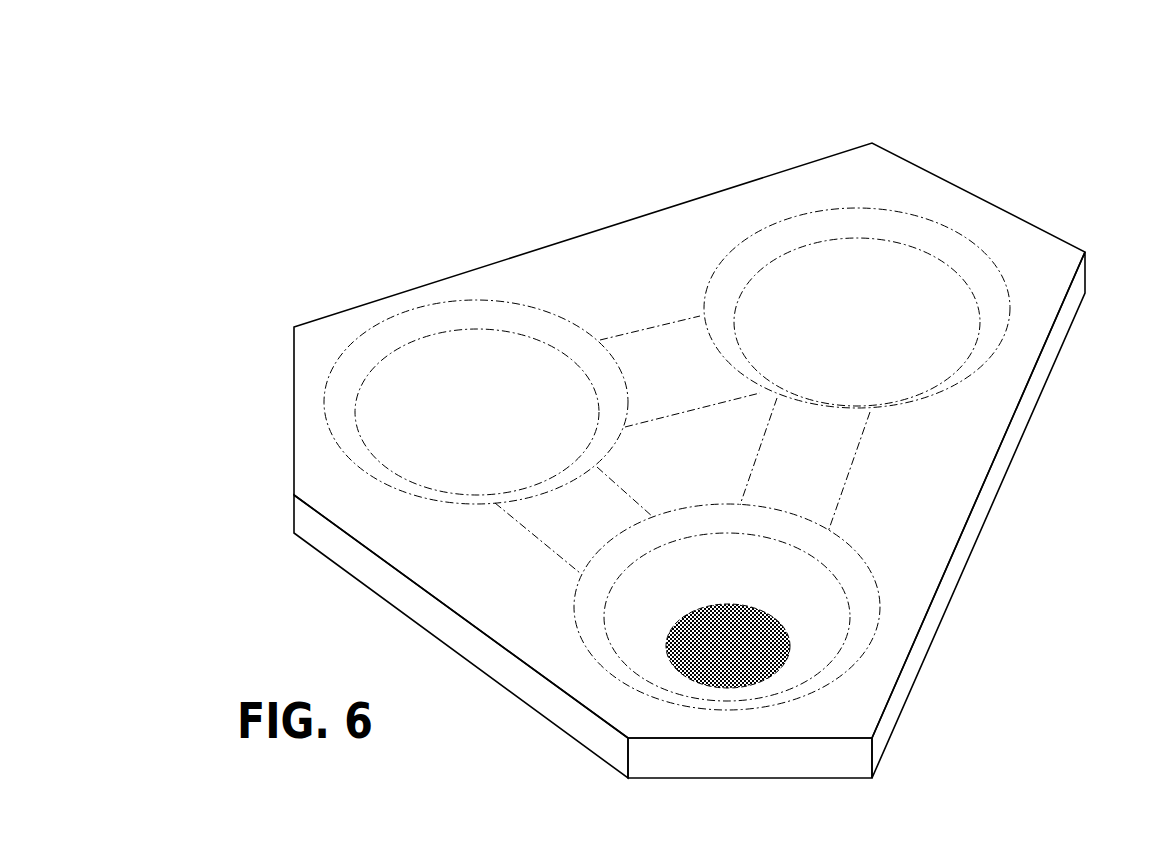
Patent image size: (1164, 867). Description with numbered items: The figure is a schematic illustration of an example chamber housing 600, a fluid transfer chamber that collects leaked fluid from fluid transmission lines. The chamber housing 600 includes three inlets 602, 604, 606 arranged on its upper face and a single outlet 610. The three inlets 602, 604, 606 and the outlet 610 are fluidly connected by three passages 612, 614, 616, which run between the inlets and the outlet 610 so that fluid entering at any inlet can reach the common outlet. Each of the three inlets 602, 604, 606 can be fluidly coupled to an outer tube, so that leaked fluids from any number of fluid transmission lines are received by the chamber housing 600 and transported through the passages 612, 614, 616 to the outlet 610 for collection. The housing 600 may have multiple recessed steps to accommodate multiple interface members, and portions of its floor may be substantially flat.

The chamber housing 600 is at (340, 70).
The inlet 602 is at (328, 350).
The inlet 604 is at (948, 212).
The inlet 606 is at (897, 585).
The outlet 610 is at (750, 662).
The passage 612 is at (558, 532).
The passage 614 is at (667, 358).
The passage 616 is at (835, 462).